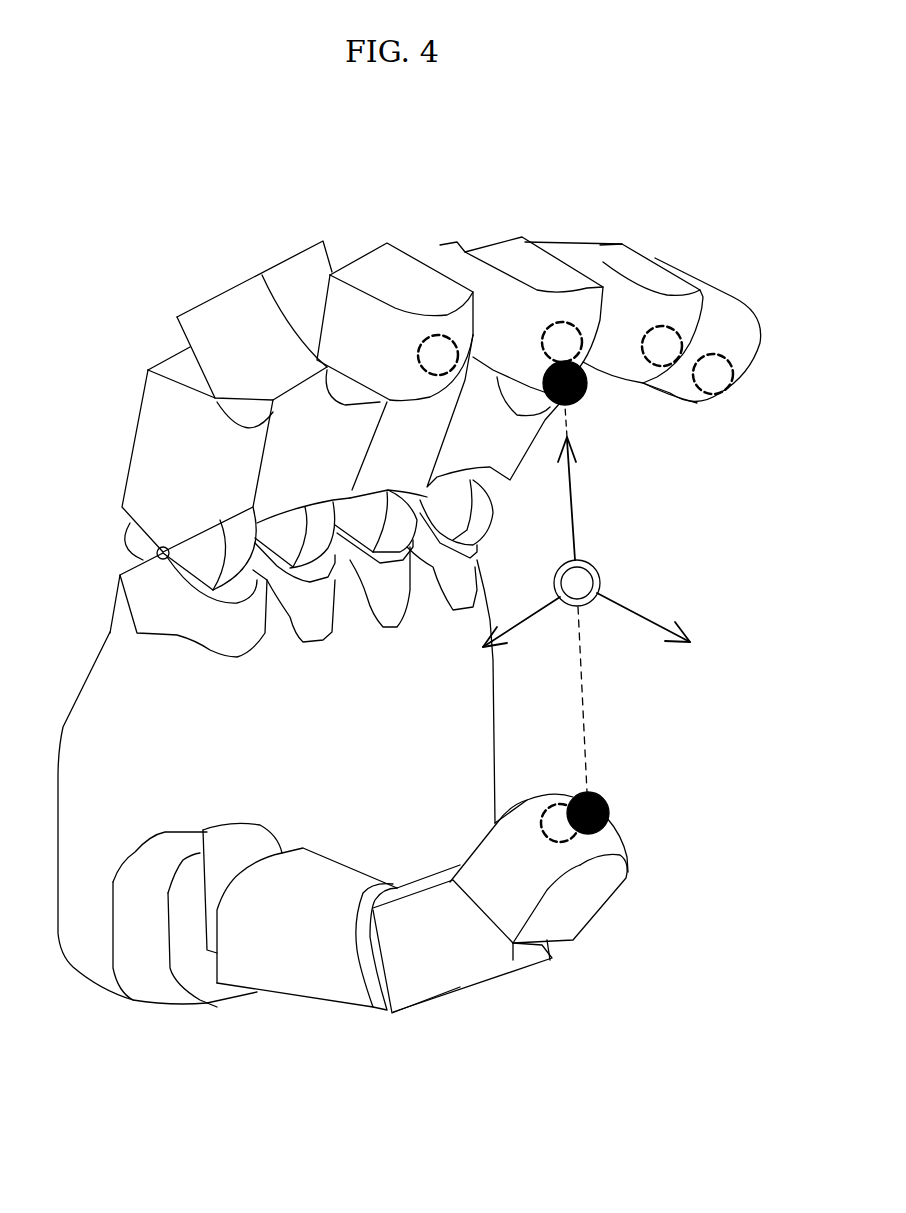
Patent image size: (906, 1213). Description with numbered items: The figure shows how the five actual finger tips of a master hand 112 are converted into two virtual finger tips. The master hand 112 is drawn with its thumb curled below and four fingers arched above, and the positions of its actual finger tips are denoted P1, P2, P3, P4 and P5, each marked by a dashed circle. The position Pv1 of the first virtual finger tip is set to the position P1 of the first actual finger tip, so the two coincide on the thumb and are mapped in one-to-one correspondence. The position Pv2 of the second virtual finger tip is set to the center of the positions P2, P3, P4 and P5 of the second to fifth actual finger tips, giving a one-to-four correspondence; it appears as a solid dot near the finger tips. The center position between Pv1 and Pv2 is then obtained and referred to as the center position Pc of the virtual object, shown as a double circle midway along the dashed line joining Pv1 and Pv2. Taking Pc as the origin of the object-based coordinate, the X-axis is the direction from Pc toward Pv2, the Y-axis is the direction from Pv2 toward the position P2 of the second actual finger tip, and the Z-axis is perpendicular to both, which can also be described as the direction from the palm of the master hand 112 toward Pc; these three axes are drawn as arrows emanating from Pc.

The master hand 112 is at (142, 316).
The position of the first actual finger tip P1 is at (563, 842).
The position of the second actual finger tip P2 is at (438, 350).
The position of the third actual finger tip P3 is at (565, 348).
The position of the fourth actual finger tip P4 is at (667, 347).
The position of the fifth actual finger tip P5 is at (720, 367).
The position of the first virtual finger tip Pv1 is at (605, 813).
The position of the second virtual finger tip Pv2 is at (580, 396).
The center position of the virtual object Pc is at (581, 573).